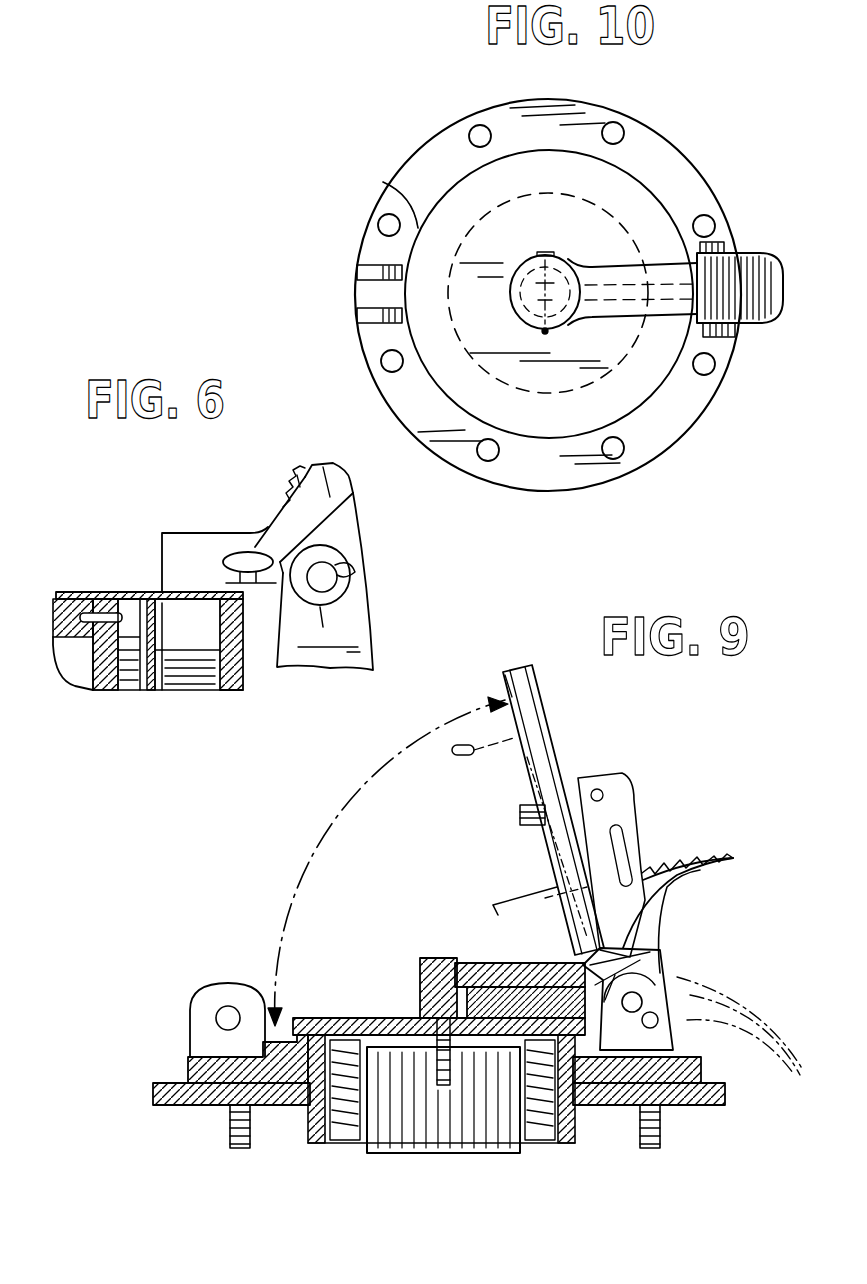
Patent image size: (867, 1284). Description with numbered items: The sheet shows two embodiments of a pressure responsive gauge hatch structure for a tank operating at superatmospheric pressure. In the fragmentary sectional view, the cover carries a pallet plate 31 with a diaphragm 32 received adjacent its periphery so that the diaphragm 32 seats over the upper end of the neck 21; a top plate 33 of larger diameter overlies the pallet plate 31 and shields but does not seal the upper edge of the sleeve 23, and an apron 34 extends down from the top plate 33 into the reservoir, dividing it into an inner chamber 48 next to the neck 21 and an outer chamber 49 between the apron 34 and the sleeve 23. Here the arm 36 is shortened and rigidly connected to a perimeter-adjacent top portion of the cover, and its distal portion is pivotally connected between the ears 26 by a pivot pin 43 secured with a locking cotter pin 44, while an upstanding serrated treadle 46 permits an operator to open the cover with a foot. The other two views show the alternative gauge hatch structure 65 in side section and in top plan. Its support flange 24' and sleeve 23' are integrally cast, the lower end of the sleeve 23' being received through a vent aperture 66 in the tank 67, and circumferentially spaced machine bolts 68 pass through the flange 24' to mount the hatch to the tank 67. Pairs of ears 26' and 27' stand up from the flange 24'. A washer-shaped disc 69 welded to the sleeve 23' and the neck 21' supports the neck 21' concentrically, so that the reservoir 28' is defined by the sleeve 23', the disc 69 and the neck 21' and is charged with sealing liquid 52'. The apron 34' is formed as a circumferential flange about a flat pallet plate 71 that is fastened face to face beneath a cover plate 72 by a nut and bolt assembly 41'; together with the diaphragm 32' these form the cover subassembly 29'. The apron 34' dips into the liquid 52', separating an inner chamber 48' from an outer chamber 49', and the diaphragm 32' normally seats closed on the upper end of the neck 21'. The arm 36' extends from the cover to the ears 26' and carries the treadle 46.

In FIG. 10, the gauge hatch structure 65 is at (712, 150).
In FIG. 9, the gauge hatch structure 65 is at (636, 742).
In FIG. 10, the machine bolts 68 is at (716, 226).
In FIG. 9, the machine bolts 68 is at (228, 1121).
In FIG. 9, the tank 67 is at (154, 1097).
In FIG. 9, the vent aperture 66 is at (587, 1110).
In FIG. 9, the disc 69 is at (348, 1150).
In FIG. 9, the pallet plate 71 is at (390, 1018).
In FIG. 10, the cover plate 72 is at (506, 305).
In FIG. 9, the cover plate 72 is at (350, 1018).
In FIG. 6, the neck 21 is at (77, 661).
In FIG. 9, the neck 21' is at (443, 1126).
In FIG. 6, the sleeve 23 is at (255, 651).
In FIG. 9, the sleeve 23' is at (291, 1193).
In FIG. 10, the support flange 24' is at (568, 295).
In FIG. 9, the support flange 24' is at (406, 1059).
In FIG. 10, the ears 26 is at (764, 247).
In FIG. 6, the ears 26 is at (349, 581).
In FIG. 10, the ears 26' is at (763, 338).
In FIG. 9, the ears 26' is at (594, 863).
In FIG. 10, the ears 27' is at (351, 283).
In FIG. 9, the ears 27' is at (200, 1020).
In FIG. 9, the reservoir 28' is at (516, 1124).
In FIG. 10, the cover subassembly 29' is at (375, 193).
In FIG. 9, the cover subassembly 29' is at (368, 869).
In FIG. 6, the pallet plate 31 is at (56, 596).
In FIG. 6, the diaphragm 32 is at (88, 579).
In FIG. 9, the diaphragm 32' is at (439, 972).
In FIG. 6, the top plate 33 is at (149, 598).
In FIG. 6, the apron 34 is at (166, 686).
In FIG. 9, the apron 34' is at (272, 1163).
In FIG. 6, the arm 36 is at (219, 543).
In FIG. 10, the arm 36' is at (653, 361).
In FIG. 9, the arm 36' is at (521, 952).
In FIG. 9, the nut and bolt assembly 41' is at (398, 1138).
In FIG. 6, the pivot pin 43 is at (337, 593).
In FIG. 6, the locking cotter pin 44 is at (388, 540).
In FIG. 10, the serrated treadle 46 is at (785, 286).
In FIG. 6, the serrated treadle 46 is at (298, 468).
In FIG. 9, the serrated treadle 46 is at (723, 853).
In FIG. 6, the inner chamber 48 is at (124, 673).
In FIG. 9, the inner chamber 48' is at (476, 1183).
In FIG. 6, the outer chamber 49 is at (168, 687).
In FIG. 9, the outer chamber 49' is at (551, 1196).
In FIG. 9, the sealing liquid 52' is at (382, 1204).